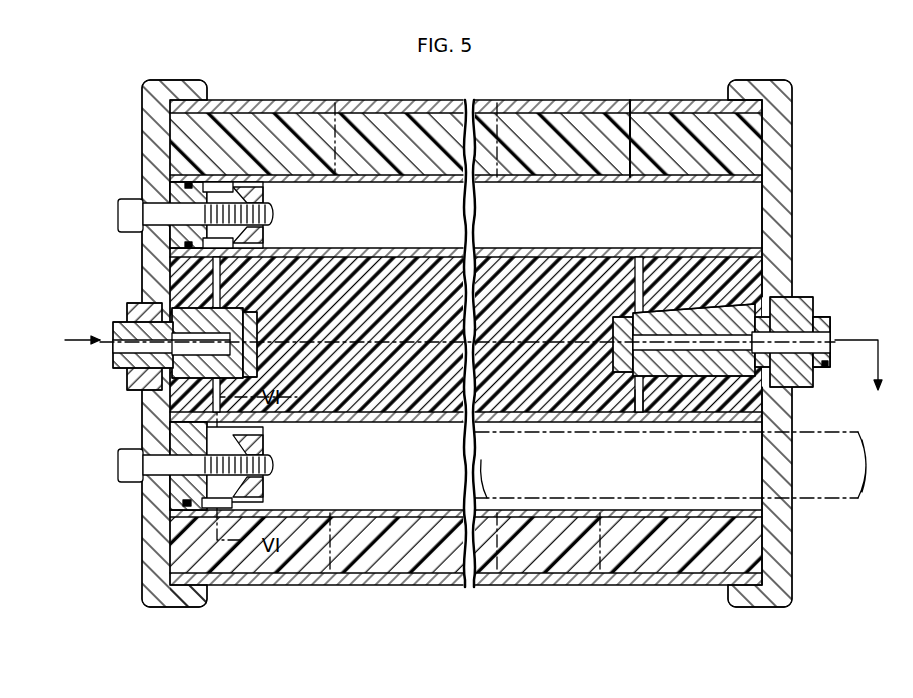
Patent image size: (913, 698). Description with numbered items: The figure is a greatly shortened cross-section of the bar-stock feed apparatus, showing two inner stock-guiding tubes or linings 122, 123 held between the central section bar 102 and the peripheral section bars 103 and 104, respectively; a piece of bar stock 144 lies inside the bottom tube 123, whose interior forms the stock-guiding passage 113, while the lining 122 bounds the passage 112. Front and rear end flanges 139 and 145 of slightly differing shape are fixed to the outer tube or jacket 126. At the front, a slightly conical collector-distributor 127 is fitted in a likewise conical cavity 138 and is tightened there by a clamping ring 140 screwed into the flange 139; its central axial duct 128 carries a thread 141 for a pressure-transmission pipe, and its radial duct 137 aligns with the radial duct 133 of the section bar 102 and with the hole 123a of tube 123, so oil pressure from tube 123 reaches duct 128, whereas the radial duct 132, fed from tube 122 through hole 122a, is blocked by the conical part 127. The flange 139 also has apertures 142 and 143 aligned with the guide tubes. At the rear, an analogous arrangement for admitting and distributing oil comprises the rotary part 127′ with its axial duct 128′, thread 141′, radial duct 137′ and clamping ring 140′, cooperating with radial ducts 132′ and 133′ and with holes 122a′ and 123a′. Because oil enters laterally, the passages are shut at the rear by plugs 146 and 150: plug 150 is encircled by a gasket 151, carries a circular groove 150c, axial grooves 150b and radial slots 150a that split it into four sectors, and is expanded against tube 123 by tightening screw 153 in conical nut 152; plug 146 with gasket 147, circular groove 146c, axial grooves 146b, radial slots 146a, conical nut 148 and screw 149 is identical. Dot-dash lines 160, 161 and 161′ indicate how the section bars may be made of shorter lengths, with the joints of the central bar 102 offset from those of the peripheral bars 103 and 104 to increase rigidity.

The end flange 145 is at (172, 93).
The circular groove 146c is at (218, 182).
The radial slot 146a is at (243, 187).
The conical nut 148 is at (268, 188).
The dot-dash line 161 is at (358, 178).
The section bar 103 is at (413, 108).
The dot-dash line 160 is at (503, 135).
The outer tube 126 is at (578, 172).
The lining 122 is at (630, 100).
The stock-guiding passage 112 is at (690, 185).
The end flange 139 is at (762, 92).
The gasket 147 is at (170, 160).
The plug 146 is at (170, 195).
The screw 149 is at (150, 216).
The hole 122a′ is at (185, 246).
The thread 141′ is at (130, 310).
The clamping ring 140′ is at (115, 330).
The radial duct 133′ is at (200, 378).
The hole 123a′ is at (183, 425).
The screw 153 is at (150, 462).
The plug 150 is at (180, 492).
The gasket 151 is at (170, 532).
The radial duct 132′ is at (265, 250).
The central section bar 102 is at (371, 262).
The conical cavity 138 is at (580, 320).
The hole 122a is at (638, 257).
The radial duct 132 is at (650, 268).
The central axial duct 128 is at (713, 340).
The aperture 142 is at (793, 222).
The central distributor 127 is at (758, 305).
The clamping ring 140 is at (832, 320).
The thread 141 is at (815, 335).
The longitudinal groove 146b is at (252, 250).
The rotary part 127′ is at (233, 322).
The central axial duct 128′ is at (222, 347).
The radial duct 137′ is at (243, 365).
The conical nut 152 is at (264, 448).
The dot-dash line 161′ is at (428, 393).
The radial slot 150a is at (265, 490).
The radial duct 137 is at (617, 372).
The hole 123a is at (640, 420).
The radial duct 133 is at (678, 388).
The bar stock 144 is at (825, 432).
The aperture 143 is at (780, 485).
The circular groove 150c is at (198, 506).
The longitudinal groove 150b is at (240, 506).
The section bar 104 is at (302, 558).
The lining 123 is at (372, 518).
The stock-guiding passage 113 is at (422, 490).